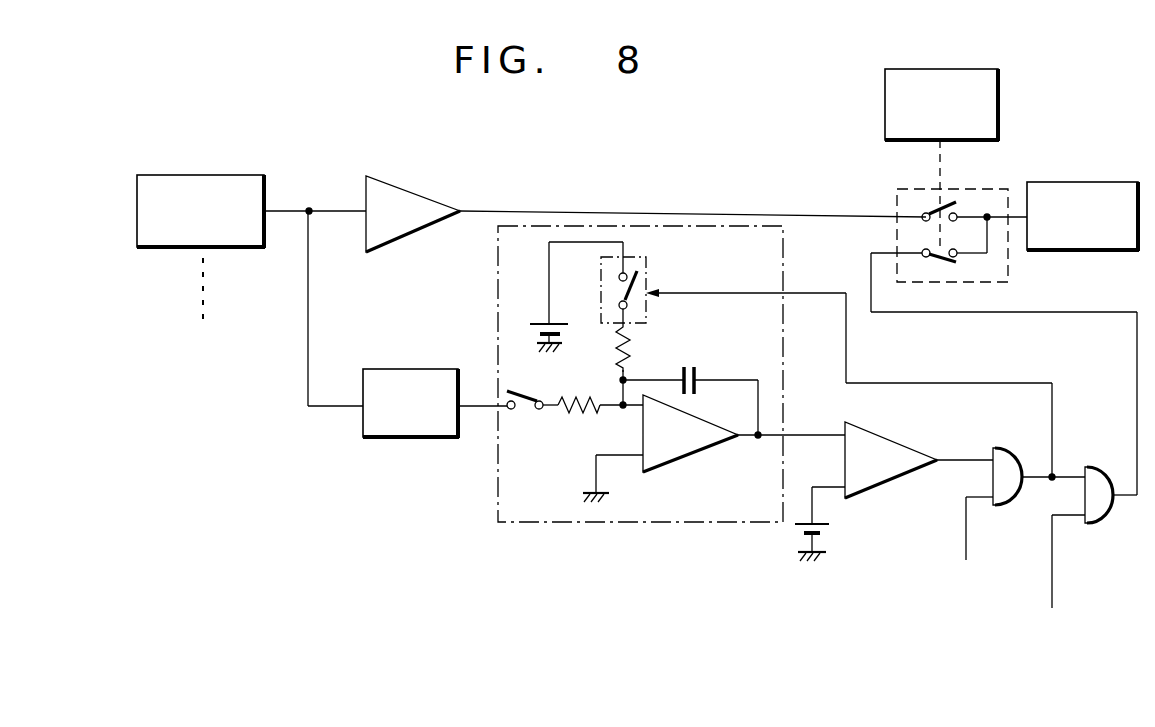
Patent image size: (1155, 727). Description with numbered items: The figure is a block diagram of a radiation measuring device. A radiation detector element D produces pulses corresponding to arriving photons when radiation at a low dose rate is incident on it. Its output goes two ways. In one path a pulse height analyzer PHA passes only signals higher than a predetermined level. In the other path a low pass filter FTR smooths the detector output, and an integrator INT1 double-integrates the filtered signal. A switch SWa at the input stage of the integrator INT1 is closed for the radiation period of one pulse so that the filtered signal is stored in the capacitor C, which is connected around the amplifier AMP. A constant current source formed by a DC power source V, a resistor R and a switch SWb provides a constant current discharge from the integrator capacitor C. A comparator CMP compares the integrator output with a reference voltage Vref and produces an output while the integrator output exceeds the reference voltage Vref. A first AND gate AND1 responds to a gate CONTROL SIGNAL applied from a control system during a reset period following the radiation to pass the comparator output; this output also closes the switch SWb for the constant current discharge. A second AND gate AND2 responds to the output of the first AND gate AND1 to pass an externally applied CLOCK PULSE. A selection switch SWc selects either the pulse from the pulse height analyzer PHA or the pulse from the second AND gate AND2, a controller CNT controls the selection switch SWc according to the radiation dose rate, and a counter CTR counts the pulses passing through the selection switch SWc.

The radiation detector element D is at (228, 188).
The pulse height analyzer PHA is at (414, 203).
The low pass filter FTR is at (411, 403).
The integrator INT1 is at (578, 525).
The switch SWa is at (525, 414).
The switch SWb is at (652, 276).
The selection switch SWc is at (896, 202).
The DC power source V is at (562, 332).
The resistor R is at (648, 340).
The capacitor C is at (693, 364).
The operational amplifier AMP is at (700, 440).
The comparator CMP is at (889, 469).
The reference voltage Vref is at (792, 532).
The first AND gate AND1 is at (1008, 456).
The second AND gate AND2 is at (1093, 488).
The controller CNT is at (942, 105).
The counter CTR is at (1083, 216).
The gate control signal CONTROL SIGNAL is at (965, 555).
The clock pulse CLOCK PULSE is at (1054, 587).